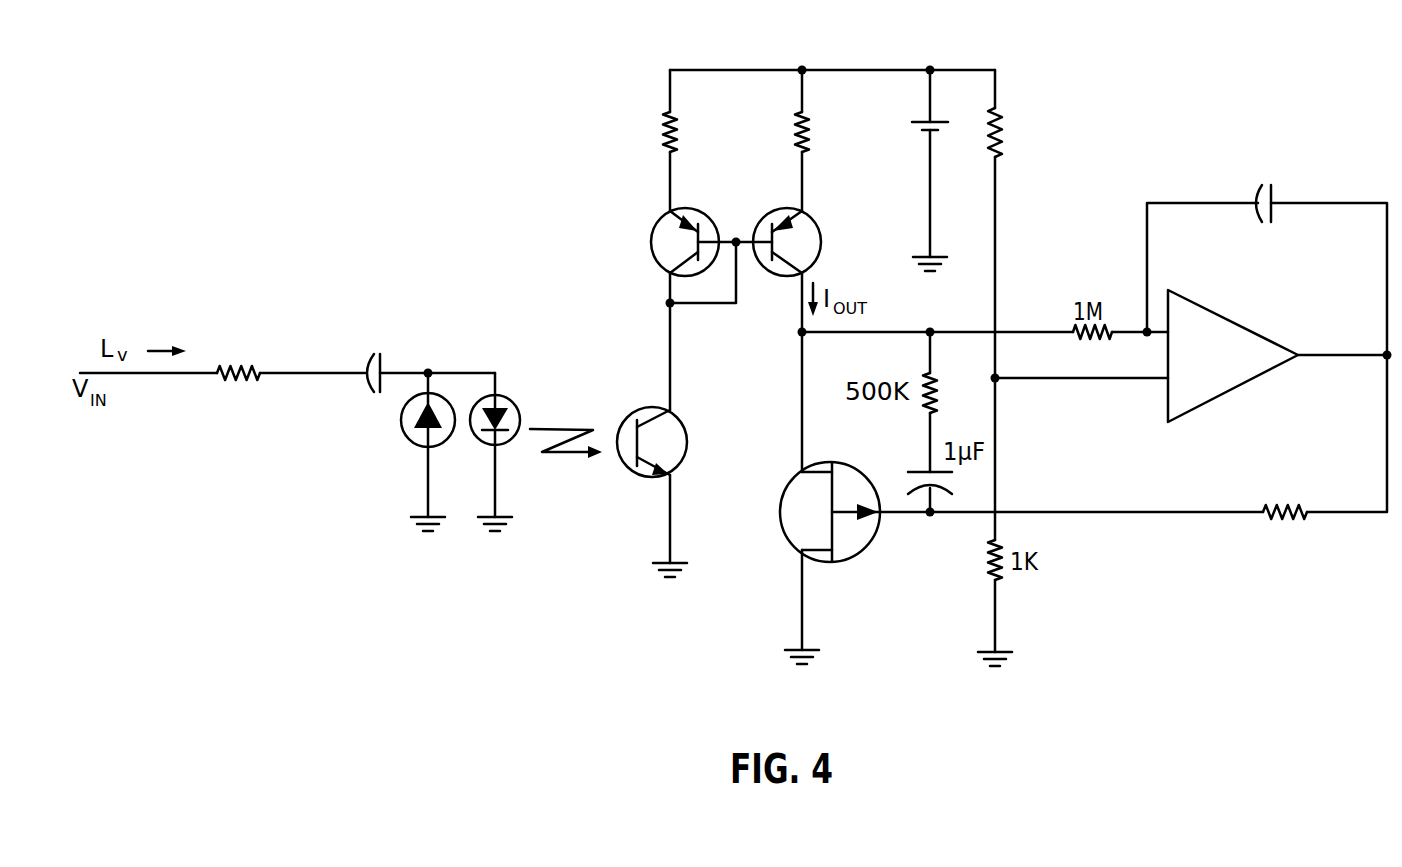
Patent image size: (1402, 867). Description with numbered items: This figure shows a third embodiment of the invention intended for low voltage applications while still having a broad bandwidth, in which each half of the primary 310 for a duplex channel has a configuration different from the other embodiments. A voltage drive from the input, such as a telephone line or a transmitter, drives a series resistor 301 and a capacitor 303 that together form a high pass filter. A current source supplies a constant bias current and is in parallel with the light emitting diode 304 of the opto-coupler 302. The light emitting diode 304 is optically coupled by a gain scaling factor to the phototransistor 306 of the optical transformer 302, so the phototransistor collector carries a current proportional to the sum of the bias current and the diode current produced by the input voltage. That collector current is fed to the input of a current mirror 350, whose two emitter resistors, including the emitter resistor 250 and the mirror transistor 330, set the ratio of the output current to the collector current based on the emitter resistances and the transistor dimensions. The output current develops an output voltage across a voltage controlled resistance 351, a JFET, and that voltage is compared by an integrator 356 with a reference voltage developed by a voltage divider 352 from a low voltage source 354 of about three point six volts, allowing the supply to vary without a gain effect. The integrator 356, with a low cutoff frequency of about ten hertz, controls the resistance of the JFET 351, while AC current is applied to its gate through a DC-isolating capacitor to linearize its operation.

The series resistor 301 is at (233, 378).
The capacitor 303 is at (364, 394).
The primary 310 is at (417, 326).
The light emitting diode 304 is at (488, 393).
The opto-coupler 302 is at (571, 478).
The phototransistor 306 is at (685, 428).
The emitter resistor RE1 250 is at (680, 122).
The current mirror 350 is at (668, 214).
The PNP transistor 2N5087 with emitter resistor RE2 330 is at (795, 127).
The low voltage source 354 is at (940, 128).
The voltage divider 352 is at (1003, 140).
The integrator 356 is at (1240, 390).
The voltage controlled resistance 351 is at (783, 530).